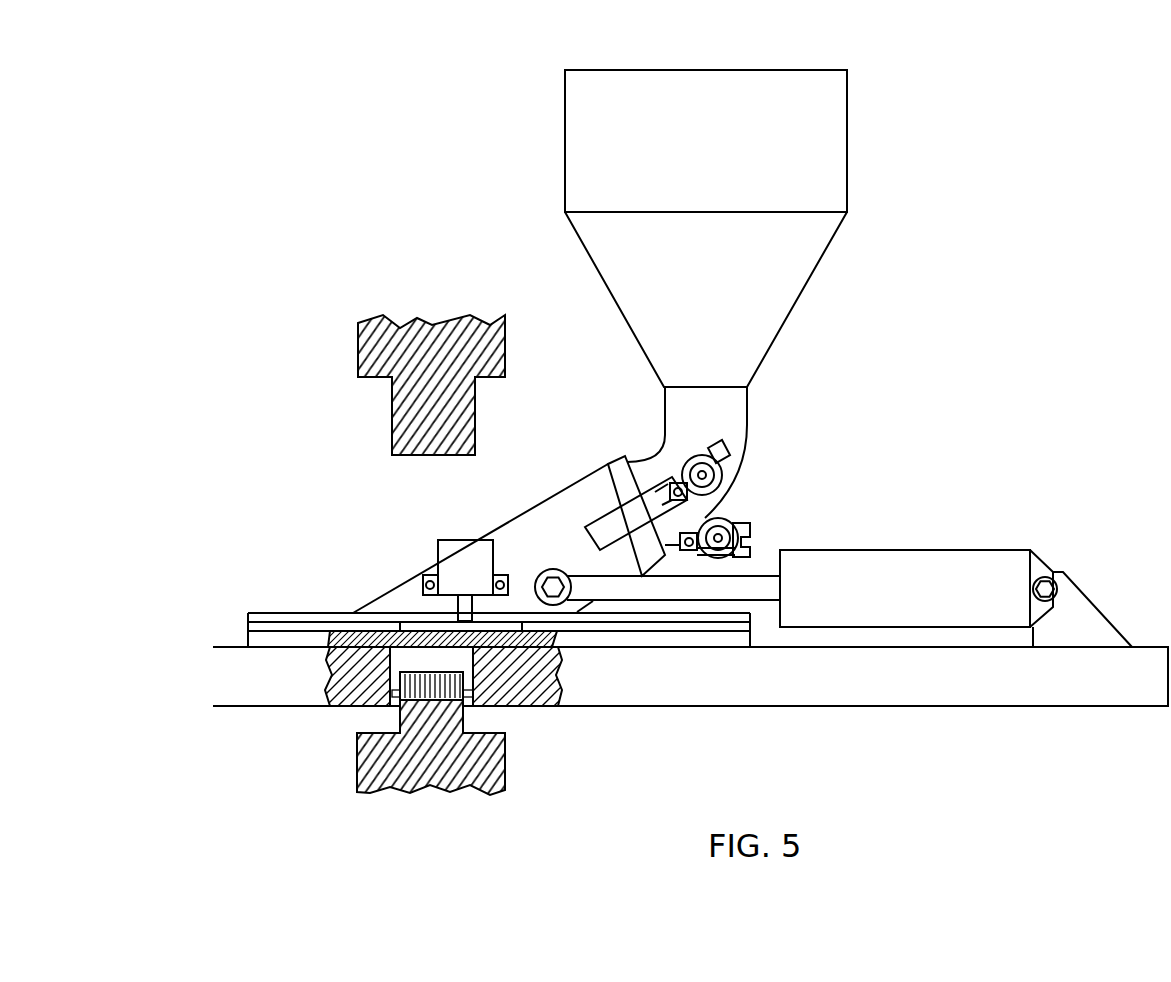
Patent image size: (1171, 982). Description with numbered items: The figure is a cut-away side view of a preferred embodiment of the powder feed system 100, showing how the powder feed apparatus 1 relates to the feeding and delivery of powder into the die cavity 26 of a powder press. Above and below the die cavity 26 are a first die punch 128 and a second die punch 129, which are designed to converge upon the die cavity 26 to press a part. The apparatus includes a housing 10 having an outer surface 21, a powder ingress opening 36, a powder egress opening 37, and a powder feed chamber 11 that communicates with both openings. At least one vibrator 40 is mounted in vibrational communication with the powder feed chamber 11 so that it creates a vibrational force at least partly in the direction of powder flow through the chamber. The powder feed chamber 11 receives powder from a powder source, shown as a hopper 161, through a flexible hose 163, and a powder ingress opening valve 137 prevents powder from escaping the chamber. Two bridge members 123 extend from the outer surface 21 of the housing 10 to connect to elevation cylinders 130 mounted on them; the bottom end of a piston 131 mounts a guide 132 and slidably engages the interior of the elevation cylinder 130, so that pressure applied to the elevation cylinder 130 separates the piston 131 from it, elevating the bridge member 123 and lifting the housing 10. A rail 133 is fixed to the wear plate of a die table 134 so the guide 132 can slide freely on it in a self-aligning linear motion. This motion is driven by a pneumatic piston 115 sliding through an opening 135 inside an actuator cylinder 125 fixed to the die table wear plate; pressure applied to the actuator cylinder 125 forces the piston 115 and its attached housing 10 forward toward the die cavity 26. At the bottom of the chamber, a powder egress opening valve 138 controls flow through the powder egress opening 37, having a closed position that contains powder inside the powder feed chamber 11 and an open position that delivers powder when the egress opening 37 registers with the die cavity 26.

The powder feed apparatus 1 is at (492, 438).
The housing 10 is at (453, 438).
The powder feed chamber 11 is at (577, 507).
The outer surface 21 is at (547, 495).
The die cavity 26 is at (400, 688).
The powder ingress opening 36 is at (712, 512).
The powder egress opening 37 is at (460, 640).
The vibrator 40 is at (703, 447).
The powder feed system 100 is at (457, 438).
The pneumatic piston 115 is at (760, 605).
The bridge member 123 is at (509, 664).
The actuator cylinder 125 is at (917, 563).
The first die punch 128 is at (383, 415).
The second die punch 129 is at (426, 742).
The elevation cylinder 130 is at (458, 540).
The piston 131 is at (420, 618).
The guide 132 is at (413, 628).
The rail 133 is at (248, 638).
The die table 134 is at (650, 693).
The opening 135 is at (780, 583).
The powder ingress opening valve 137 is at (623, 461).
The powder egress opening valve 138 is at (387, 660).
The hopper 161 is at (848, 190).
The flexible hose 163 is at (752, 397).